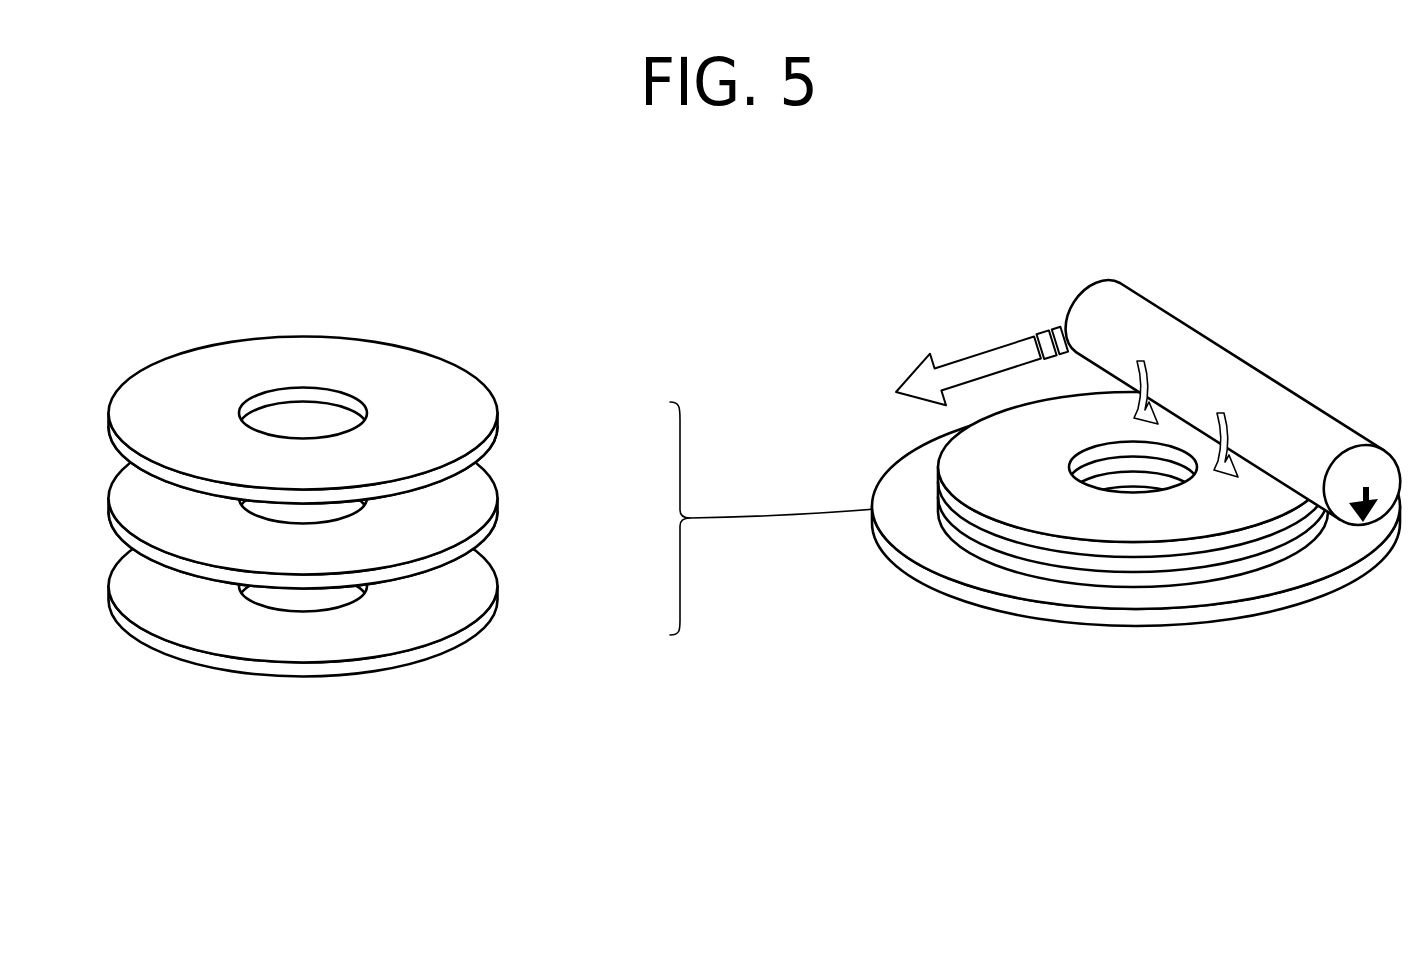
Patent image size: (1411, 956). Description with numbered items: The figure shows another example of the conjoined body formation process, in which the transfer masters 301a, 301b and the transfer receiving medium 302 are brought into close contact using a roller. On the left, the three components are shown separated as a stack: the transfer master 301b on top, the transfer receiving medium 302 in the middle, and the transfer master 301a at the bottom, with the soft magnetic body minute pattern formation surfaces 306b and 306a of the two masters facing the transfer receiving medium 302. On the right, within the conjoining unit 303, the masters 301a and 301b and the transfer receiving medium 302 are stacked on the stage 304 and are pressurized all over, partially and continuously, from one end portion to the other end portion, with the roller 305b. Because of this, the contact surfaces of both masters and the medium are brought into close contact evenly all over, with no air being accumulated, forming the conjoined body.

The transfer master 301a is at (470, 632).
The transfer master 301b is at (473, 403).
The transfer receiving medium 302 is at (472, 517).
The soft magnetic body minute pattern formation surface 306a is at (470, 572).
The soft magnetic body minute pattern formation surface 306b is at (474, 483).
The conjoining unit 303 is at (1006, 252).
The stage 304 is at (1277, 577).
The roller 305b is at (1207, 360).